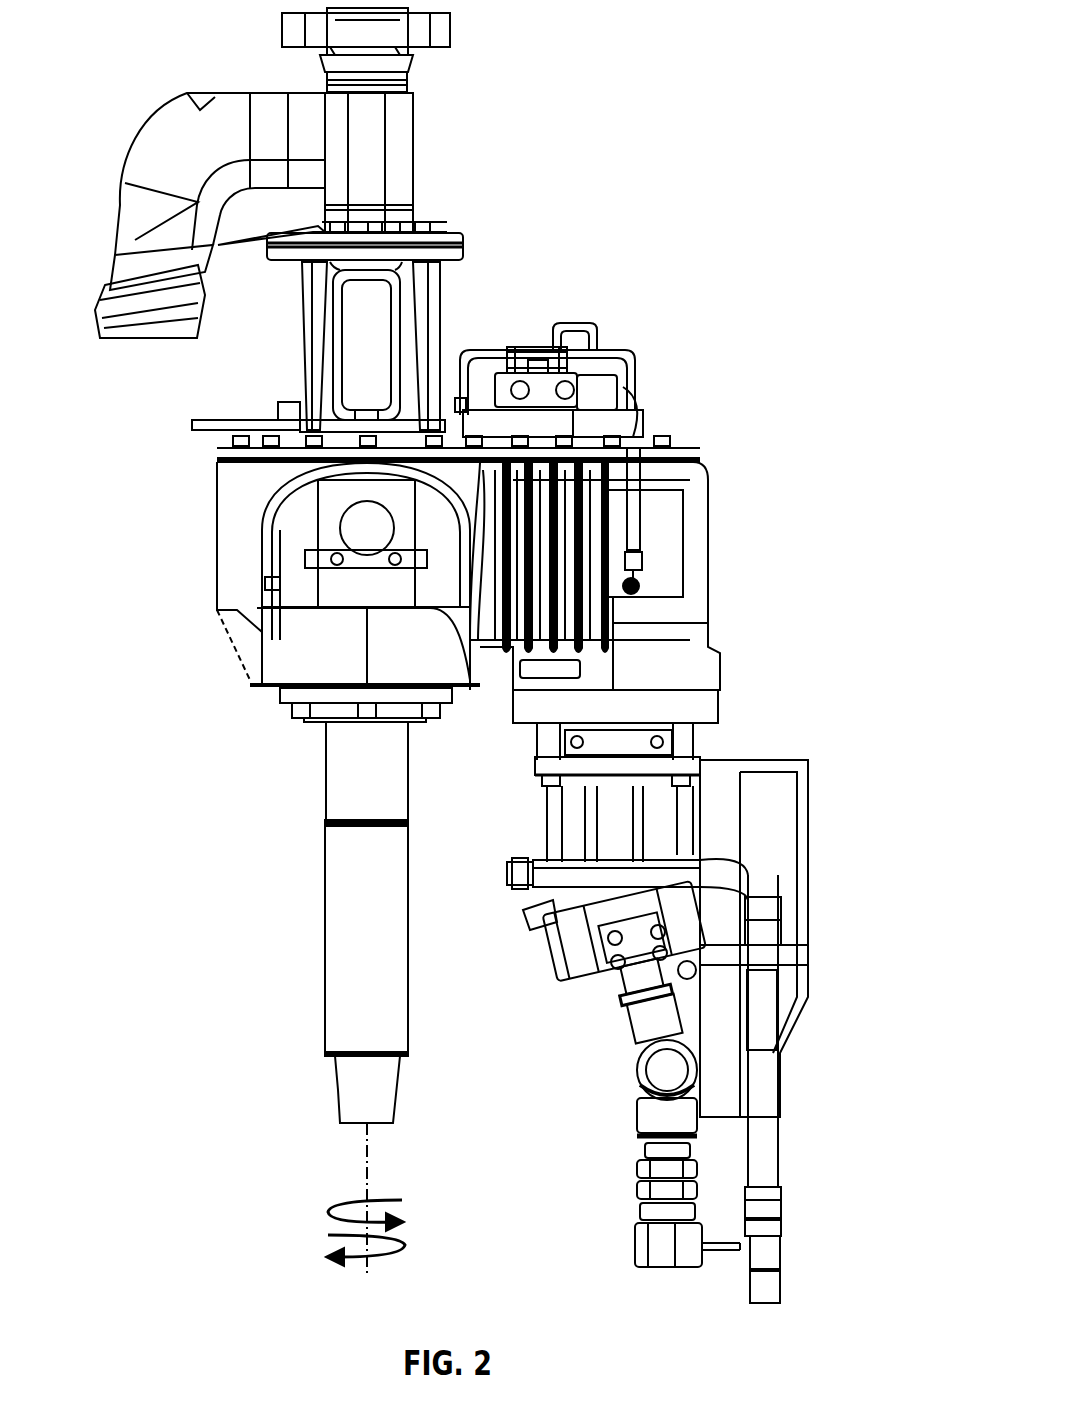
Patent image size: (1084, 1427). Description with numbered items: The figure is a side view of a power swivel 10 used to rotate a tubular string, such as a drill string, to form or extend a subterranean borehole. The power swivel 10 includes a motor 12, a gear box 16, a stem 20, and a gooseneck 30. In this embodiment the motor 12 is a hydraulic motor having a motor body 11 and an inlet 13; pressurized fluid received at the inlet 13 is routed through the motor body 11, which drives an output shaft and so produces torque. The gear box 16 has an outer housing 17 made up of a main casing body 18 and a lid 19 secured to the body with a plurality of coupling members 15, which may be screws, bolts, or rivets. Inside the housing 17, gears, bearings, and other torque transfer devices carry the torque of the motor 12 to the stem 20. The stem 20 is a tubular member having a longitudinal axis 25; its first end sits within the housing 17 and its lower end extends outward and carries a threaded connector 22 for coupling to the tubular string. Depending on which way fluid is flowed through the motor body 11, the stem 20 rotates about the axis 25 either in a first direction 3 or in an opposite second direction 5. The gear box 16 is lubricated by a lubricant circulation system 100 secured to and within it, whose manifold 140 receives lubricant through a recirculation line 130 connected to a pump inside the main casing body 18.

The power swivel 10 is at (622, 160).
The gooseneck 30 is at (400, 148).
The manifold 140 is at (539, 355).
The lubricant circulation system 100 is at (633, 322).
The coupling members 15 is at (240, 433).
The lid 19 is at (220, 450).
The outer housing 17 is at (205, 519).
The gear box 16 is at (172, 589).
The recirculation line 130 is at (637, 505).
The main casing body 18 is at (668, 562).
The motor 12 is at (838, 848).
The stem 20 is at (343, 975).
The motor body 11 is at (585, 918).
The threaded connector 22 is at (352, 1078).
The longitudinal axis 25 is at (365, 1165).
The first direction 3 is at (327, 1213).
The second direction 5 is at (403, 1243).
The inlet 13 is at (635, 1240).